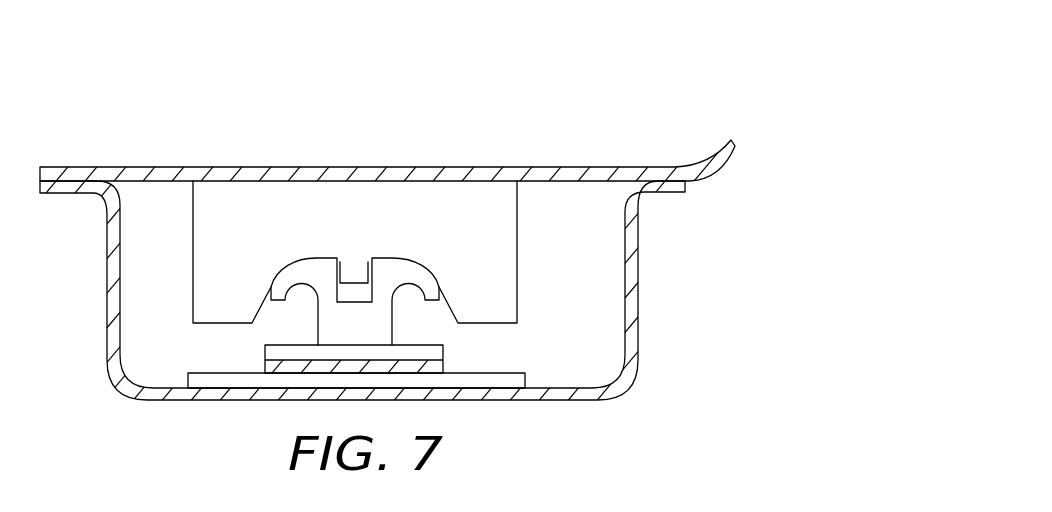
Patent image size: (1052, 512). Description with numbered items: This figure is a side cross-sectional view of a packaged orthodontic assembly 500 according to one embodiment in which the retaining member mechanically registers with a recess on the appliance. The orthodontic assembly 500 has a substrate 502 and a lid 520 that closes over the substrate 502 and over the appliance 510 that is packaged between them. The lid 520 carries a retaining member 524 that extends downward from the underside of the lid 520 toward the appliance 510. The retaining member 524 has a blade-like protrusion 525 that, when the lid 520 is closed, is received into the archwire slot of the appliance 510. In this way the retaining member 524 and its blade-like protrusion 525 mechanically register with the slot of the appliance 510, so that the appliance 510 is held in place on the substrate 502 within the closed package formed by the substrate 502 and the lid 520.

The orthodontic assembly 500 is at (484, 223).
The substrate 502 is at (644, 229).
The appliance 510 is at (310, 272).
The lid 520 is at (566, 160).
The retaining member 524 is at (226, 203).
The blade-like protrusion 525 is at (368, 274).